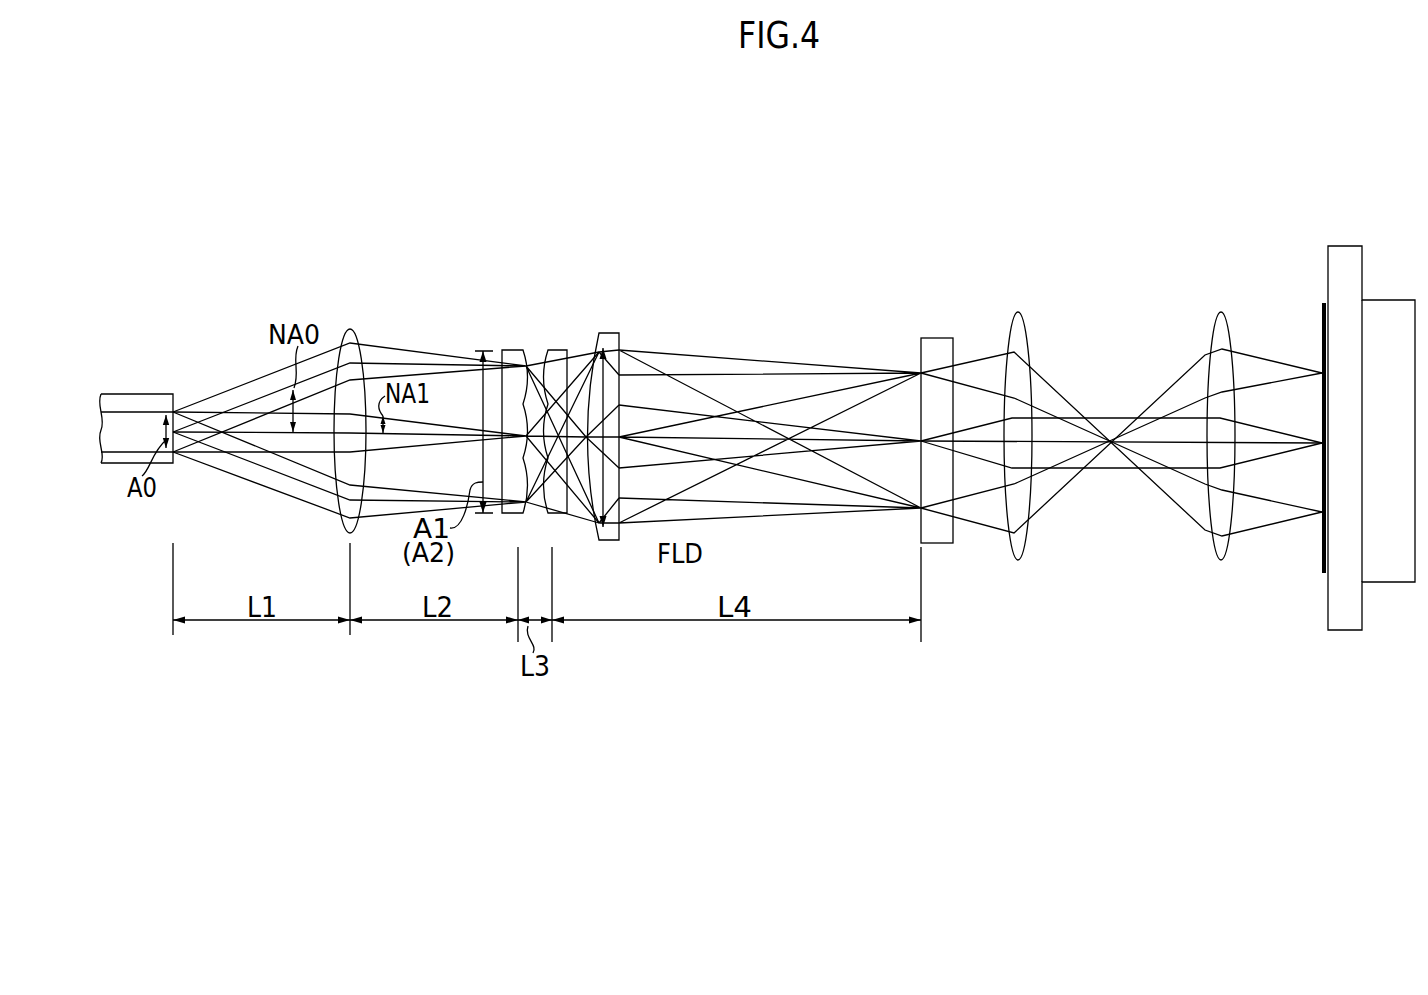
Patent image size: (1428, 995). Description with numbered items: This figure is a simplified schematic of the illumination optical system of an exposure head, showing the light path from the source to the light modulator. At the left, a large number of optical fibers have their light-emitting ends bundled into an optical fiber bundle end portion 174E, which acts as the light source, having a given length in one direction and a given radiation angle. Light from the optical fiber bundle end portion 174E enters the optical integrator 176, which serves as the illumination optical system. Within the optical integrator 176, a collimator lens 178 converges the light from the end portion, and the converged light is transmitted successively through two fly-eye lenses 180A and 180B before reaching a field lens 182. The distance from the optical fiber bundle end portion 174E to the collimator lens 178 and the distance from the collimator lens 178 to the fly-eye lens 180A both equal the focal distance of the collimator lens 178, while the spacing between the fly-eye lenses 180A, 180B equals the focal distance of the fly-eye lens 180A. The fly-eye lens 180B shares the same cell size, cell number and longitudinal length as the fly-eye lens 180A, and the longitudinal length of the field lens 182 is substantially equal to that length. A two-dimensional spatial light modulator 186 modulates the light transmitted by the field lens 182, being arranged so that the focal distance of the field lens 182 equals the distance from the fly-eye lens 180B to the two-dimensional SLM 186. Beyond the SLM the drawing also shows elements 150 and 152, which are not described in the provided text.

The optical fiber bundle end portion 174E is at (167, 393).
The optical integrator 176 is at (833, 243).
The collimator lens 178 is at (358, 338).
The fly-eye lens 180A is at (510, 347).
The fly-eye lens 180B is at (557, 347).
The field lens 182 is at (608, 331).
The two-dimensional spatial light modulator 186 is at (937, 337).
The mask 150 is at (1322, 550).
The mask holder 152 is at (1338, 632).